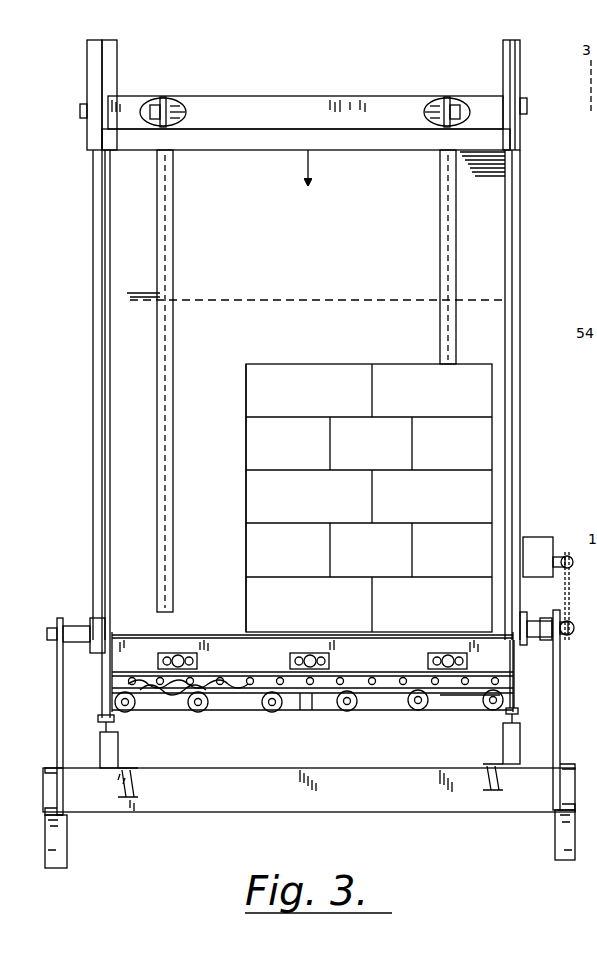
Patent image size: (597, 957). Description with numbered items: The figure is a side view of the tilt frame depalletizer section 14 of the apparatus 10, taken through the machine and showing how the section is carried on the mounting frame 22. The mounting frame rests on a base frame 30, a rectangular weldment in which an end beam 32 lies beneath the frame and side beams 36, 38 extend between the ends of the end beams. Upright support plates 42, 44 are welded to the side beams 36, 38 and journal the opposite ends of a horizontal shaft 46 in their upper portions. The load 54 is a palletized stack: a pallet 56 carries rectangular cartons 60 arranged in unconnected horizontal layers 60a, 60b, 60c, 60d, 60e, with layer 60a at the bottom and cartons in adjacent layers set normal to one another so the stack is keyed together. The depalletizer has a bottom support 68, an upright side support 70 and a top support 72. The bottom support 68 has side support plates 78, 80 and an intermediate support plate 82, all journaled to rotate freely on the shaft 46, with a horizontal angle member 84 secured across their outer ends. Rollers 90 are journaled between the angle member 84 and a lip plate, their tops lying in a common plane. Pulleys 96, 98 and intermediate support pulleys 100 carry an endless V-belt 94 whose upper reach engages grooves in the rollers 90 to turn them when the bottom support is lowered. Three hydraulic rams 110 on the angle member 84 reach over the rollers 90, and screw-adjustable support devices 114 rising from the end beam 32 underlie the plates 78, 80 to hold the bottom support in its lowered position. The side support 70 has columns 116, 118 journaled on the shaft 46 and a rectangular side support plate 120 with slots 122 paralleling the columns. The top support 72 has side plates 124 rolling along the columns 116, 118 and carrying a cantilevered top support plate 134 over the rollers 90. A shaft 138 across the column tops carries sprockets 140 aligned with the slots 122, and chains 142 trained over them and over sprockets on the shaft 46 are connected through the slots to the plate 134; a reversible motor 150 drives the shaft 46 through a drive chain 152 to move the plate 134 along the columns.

The apparatus 10 is at (587, 719).
The tilt frame depalletizer section 14 is at (528, 200).
The mounting frame 22 is at (480, 816).
The base frame 30 is at (226, 816).
The end beam 32 is at (355, 806).
The side beam 36 is at (64, 792).
The side beam 38 is at (557, 786).
The support plate 42 is at (63, 658).
The support plate 44 is at (556, 722).
The shaft 46 is at (535, 620).
The load 54 is at (290, 355).
The pallet 56 is at (414, 628).
The cartons 60 is at (408, 375).
The layer 60a is at (244, 612).
The layer 60b is at (244, 560).
The layer 60c is at (244, 505).
The layer 60d is at (244, 452).
The layer 60e is at (244, 400).
The bottom support 68 is at (521, 680).
The side support 70 is at (410, 290).
The top support 72 is at (318, 108).
The side support plate 78 is at (103, 700).
The side support plate 80 is at (515, 694).
The intermediate support plate 82 is at (305, 712).
The angle member 84 is at (457, 686).
The rollers 90 is at (340, 668).
The V-belt 94 is at (410, 710).
The pulley 96 is at (128, 708).
The pulley 98 is at (491, 708).
The support pulleys 100 is at (349, 708).
The hydraulic rams 110 is at (180, 660).
The screw-adjustable support devices 114 is at (118, 748).
The column 116 is at (93, 238).
The column 118 is at (517, 240).
The side support plate 120 is at (326, 273).
The slots 122 is at (173, 222).
The side plates 124 is at (90, 72).
The top support plate 134 is at (345, 140).
The shaft 138 is at (175, 108).
The sprockets 140 is at (162, 102).
The chains 142 is at (167, 262).
The reversible motor 150 is at (532, 538).
The drive chain 152 is at (568, 556).